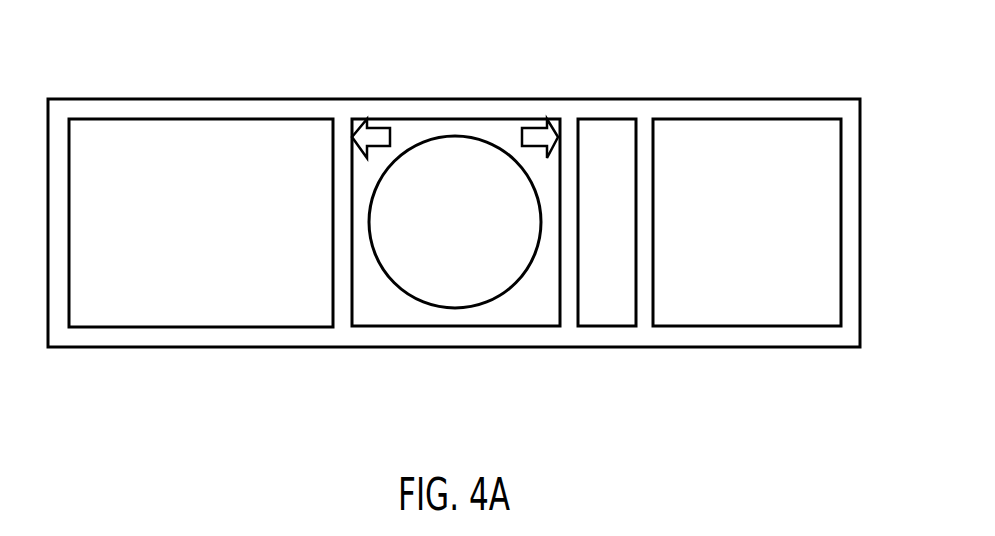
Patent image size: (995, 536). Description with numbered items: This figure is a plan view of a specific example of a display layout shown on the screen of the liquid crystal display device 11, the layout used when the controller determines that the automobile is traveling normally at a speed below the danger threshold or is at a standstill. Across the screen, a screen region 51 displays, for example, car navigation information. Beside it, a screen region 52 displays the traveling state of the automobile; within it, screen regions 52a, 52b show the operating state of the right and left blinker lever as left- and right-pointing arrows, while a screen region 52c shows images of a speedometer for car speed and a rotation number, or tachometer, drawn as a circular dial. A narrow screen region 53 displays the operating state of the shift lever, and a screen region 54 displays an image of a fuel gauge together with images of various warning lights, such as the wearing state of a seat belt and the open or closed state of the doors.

The liquid crystal display device 11 is at (808, 98).
The screen region 51 is at (200, 117).
The screen region 52 is at (443, 115).
The screen region 52a is at (373, 118).
The screen region 52b is at (530, 118).
The screen region 52c is at (440, 293).
The screen region 53 is at (604, 117).
The screen region 54 is at (745, 117).